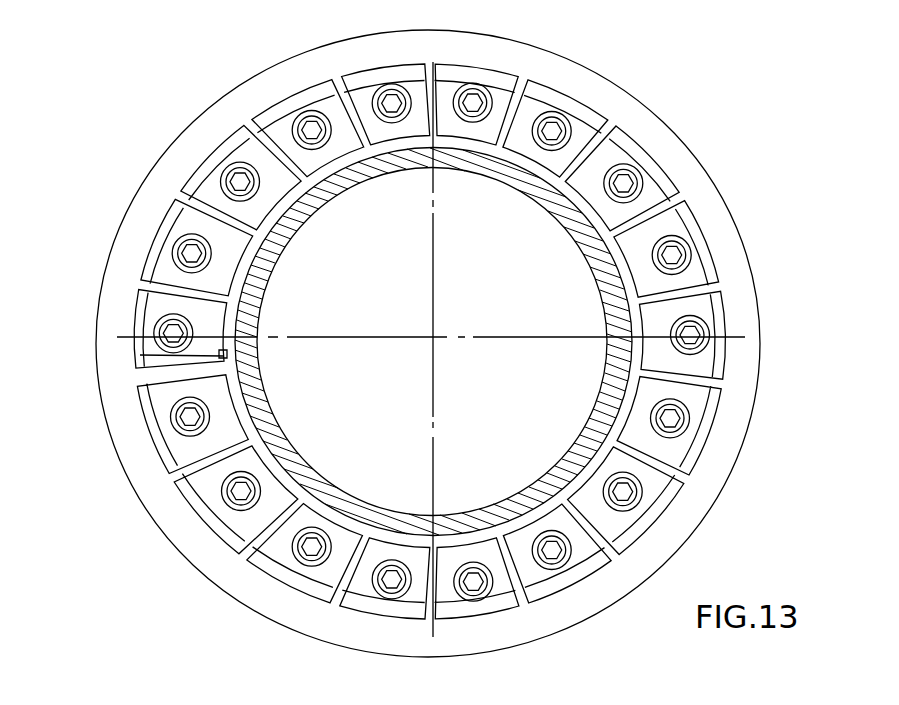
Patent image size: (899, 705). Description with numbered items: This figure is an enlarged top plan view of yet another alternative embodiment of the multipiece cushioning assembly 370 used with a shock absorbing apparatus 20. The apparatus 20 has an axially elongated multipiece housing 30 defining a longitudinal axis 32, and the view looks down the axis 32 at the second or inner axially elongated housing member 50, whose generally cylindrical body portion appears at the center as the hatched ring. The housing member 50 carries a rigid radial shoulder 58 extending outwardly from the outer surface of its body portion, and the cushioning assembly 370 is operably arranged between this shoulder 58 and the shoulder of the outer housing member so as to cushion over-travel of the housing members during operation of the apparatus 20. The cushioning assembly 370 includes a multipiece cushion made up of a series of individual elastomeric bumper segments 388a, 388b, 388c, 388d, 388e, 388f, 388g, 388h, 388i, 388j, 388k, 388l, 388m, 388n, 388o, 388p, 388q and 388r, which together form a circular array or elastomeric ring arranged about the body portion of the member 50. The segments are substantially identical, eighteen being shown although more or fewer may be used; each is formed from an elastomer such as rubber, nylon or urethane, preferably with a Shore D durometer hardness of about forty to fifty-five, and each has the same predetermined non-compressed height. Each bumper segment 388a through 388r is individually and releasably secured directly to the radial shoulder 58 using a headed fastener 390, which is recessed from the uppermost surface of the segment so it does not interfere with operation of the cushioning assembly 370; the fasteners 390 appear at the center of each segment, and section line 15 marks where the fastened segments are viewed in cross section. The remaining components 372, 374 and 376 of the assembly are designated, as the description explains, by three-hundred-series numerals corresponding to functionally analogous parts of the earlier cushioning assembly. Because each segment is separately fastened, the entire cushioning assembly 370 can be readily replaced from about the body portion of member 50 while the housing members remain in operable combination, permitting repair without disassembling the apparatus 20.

The section line 15- 15 is at (765, 223).
The shock absorbing apparatus 20 is at (100, 186).
The multipiece housing 30 is at (244, 631).
The longitudinal axis 32 is at (430, 341).
The second or inner axially elongated member 50 is at (357, 474).
The rigid radial shoulder 58 is at (673, 537).
The cushioning assembly 370 is at (706, 139).
The outer ring 372 is at (558, 609).
The locating tab 374 is at (158, 367).
The ring body 376 is at (143, 251).
The elastomeric bumper segment 388a is at (398, 612).
The elastomeric bumper segment 388b is at (497, 607).
The elastomeric bumper segment 388c is at (567, 558).
The elastomeric bumper segment 388d is at (670, 484).
The elastomeric bumper segment 388e is at (698, 400).
The elastomeric bumper segment 388f is at (707, 308).
The elastomeric bumper segment 388g is at (685, 206).
The elastomeric bumper segment 388h is at (615, 150).
The elastomeric bumper segment 388i is at (530, 107).
The elastomeric bumper segment 388j is at (448, 120).
The elastomeric bumper segment 388k is at (372, 130).
The elastomeric bumper segment 388l is at (300, 163).
The elastomeric bumper segment 388m is at (250, 213).
The elastomeric bumper segment 388n is at (167, 277).
The elastomeric bumper segment 388o is at (150, 371).
The elastomeric bumper segment 388p is at (177, 473).
The elastomeric bumper segment 388q is at (230, 525).
The elastomeric bumper segment 388r is at (320, 585).
The fastener 390 is at (250, 477).